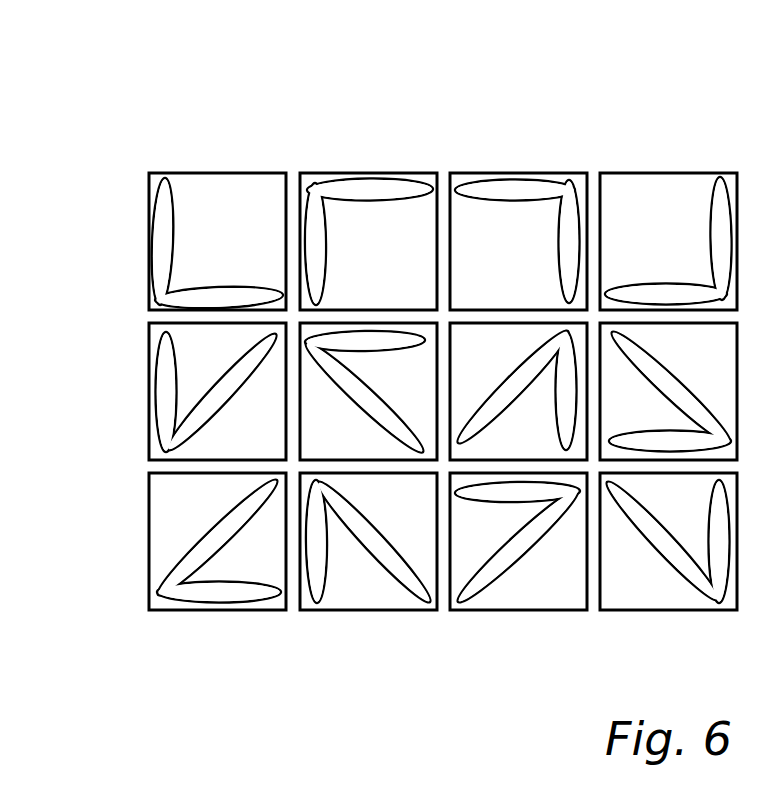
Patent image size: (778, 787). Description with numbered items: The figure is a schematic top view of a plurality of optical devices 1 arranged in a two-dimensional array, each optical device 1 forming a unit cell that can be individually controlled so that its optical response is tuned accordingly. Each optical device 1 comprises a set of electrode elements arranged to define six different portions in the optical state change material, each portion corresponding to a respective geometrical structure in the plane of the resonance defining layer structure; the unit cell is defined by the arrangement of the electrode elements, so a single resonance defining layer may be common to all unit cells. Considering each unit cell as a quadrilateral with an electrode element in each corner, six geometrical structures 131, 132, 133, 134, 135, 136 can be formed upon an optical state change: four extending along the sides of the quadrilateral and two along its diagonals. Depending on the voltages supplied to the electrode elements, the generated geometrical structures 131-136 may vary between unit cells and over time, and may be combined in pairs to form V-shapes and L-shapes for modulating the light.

The optical device 1 is at (211, 126).
The geometrical structure 131 is at (215, 383).
The geometrical structure 132 is at (247, 284).
The geometrical structure 133 is at (559, 252).
The geometrical structure 134 is at (172, 192).
The geometrical structure 135 is at (421, 178).
The geometrical structure 136 is at (356, 404).